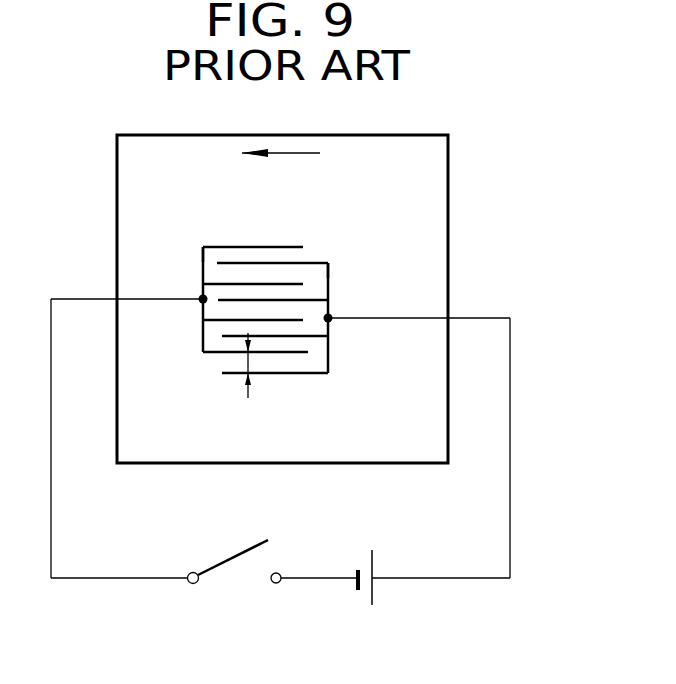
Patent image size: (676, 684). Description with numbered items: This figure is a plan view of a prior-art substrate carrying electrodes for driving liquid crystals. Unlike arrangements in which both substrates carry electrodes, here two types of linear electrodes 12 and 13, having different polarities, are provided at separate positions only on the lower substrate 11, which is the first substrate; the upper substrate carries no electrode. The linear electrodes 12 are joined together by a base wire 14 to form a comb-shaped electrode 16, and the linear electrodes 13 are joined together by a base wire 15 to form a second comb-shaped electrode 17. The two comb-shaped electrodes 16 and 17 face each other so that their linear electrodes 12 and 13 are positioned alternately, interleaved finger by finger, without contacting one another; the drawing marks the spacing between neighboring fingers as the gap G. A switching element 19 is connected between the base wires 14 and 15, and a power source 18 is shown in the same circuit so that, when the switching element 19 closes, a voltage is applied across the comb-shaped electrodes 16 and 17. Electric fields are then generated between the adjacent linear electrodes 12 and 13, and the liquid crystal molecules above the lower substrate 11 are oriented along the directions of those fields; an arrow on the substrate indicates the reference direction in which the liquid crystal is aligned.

The lower substrate 11 is at (448, 203).
The linear electrodes 12 is at (250, 247).
The linear electrodes 13 is at (318, 262).
The base wire 14 is at (203, 297).
The base wire 15 is at (328, 280).
The comb-shaped electrode 16 is at (203, 255).
The comb-shaped electrode 17 is at (328, 268).
The power source 18 is at (384, 596).
The switching element 19 is at (232, 588).
The gap G is at (248, 362).